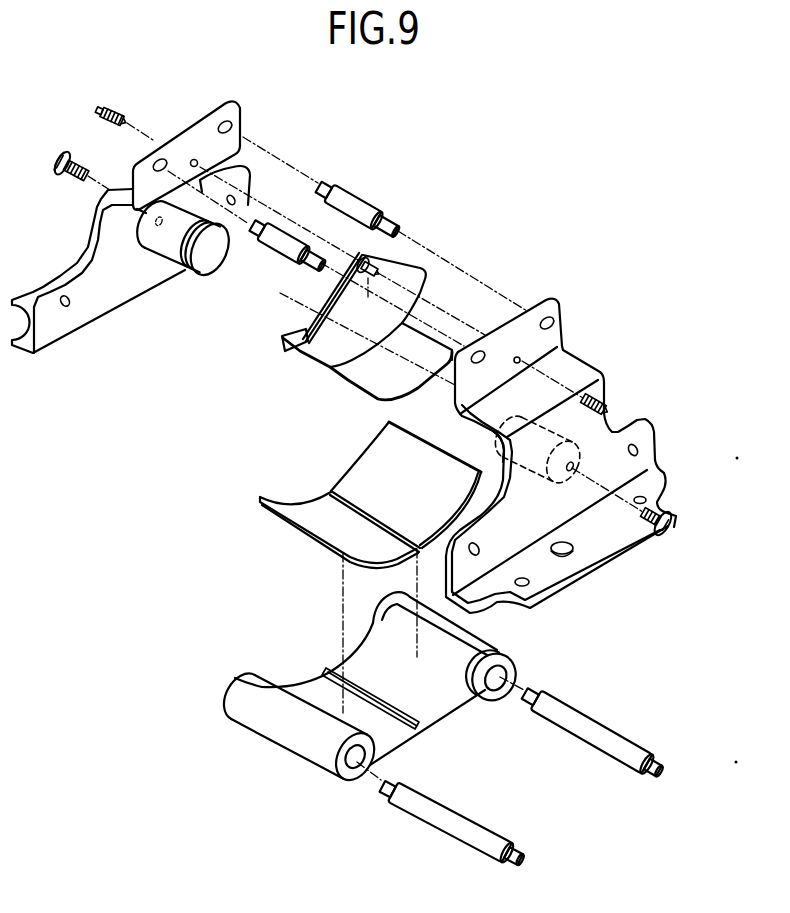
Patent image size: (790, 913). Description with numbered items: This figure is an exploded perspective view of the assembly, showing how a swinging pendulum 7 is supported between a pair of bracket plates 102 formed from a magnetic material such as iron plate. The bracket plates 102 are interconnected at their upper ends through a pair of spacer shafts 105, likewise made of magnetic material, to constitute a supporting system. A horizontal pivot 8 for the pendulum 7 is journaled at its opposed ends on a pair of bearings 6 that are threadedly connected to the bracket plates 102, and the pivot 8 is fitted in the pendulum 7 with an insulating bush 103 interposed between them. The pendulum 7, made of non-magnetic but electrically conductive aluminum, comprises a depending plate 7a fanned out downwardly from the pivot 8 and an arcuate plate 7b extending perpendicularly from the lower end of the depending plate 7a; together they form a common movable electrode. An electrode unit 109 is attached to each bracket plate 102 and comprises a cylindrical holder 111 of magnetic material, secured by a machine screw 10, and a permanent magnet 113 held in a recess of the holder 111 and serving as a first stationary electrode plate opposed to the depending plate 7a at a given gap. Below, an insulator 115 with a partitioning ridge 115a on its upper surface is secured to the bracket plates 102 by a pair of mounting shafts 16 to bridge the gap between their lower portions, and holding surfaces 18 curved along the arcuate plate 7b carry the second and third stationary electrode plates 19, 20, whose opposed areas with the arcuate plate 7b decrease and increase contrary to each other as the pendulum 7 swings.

The bearing 6 is at (114, 110).
The machine screw 10 is at (53, 159).
The bracket plate 102 is at (97, 244).
The cylindrical holder 111 is at (157, 252).
The electrode unit 109 is at (182, 267).
The permanent magnet 113 is at (213, 256).
The spacer shaft 105 is at (345, 208).
The insulating bush 103 is at (364, 259).
The pivot 8 is at (369, 302).
The pendulum 7 is at (366, 338).
The depending plate 7a is at (328, 290).
The arcuate plate 7b is at (363, 380).
The third stationary electrode plate 20 is at (365, 470).
The second stationary electrode plate 19 is at (303, 528).
The insulator 115 is at (241, 688).
The holding surface 18 is at (298, 692).
The partitioning ridge 115a is at (379, 703).
The mounting shaft 16 is at (593, 723).